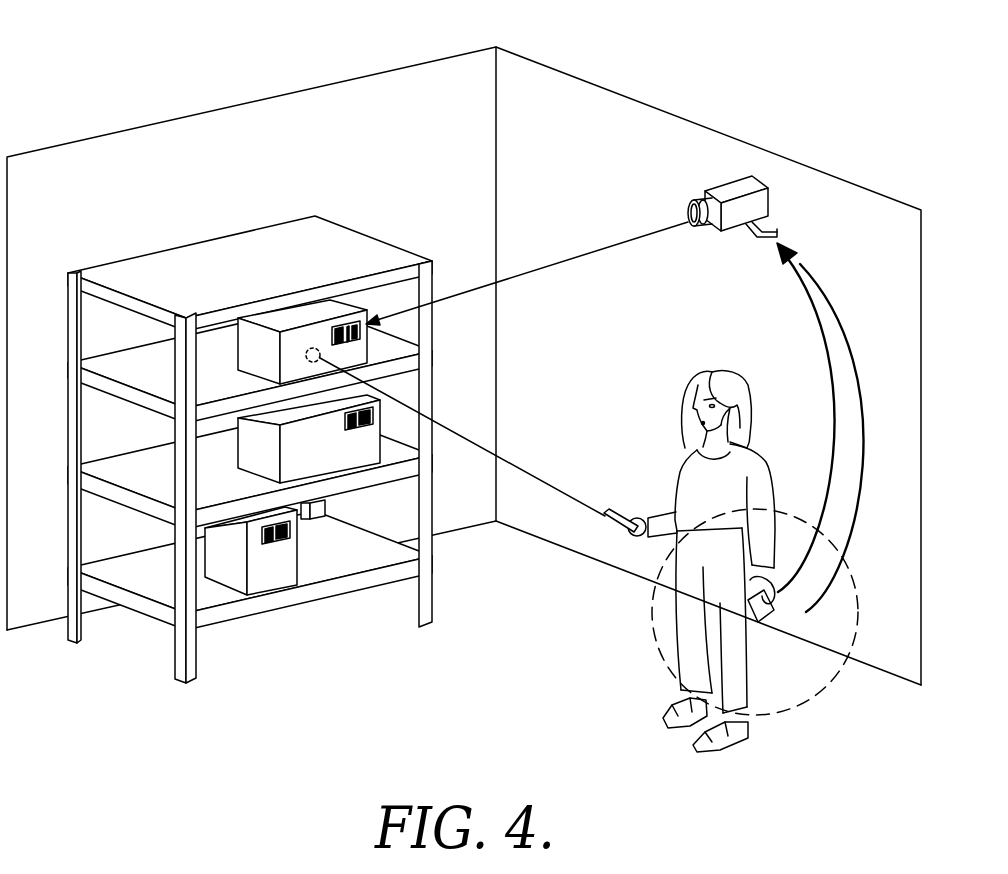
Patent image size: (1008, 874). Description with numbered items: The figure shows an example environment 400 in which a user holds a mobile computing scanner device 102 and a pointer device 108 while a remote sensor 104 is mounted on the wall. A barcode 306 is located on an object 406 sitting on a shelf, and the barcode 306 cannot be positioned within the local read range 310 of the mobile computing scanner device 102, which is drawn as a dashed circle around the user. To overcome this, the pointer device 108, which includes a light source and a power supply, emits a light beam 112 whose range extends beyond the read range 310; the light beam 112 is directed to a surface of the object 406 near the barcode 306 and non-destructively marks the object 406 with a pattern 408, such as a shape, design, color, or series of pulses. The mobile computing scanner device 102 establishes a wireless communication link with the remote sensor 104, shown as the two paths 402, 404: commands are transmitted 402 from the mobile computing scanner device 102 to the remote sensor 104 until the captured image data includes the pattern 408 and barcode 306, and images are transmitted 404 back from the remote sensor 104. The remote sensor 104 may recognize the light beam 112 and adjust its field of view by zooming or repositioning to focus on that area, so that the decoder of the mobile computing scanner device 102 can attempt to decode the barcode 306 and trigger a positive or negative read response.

The environment 400 is at (133, 67).
The pattern 408 is at (282, 355).
The object 406 is at (340, 296).
The barcode 306 is at (349, 310).
The remote sensor 104 is at (770, 199).
The transmitted images 404 is at (853, 320).
The transmitted commands 402 is at (838, 410).
The light beam 112 is at (535, 462).
The pointer device 108 is at (609, 540).
The mobile computing scanner device 102 is at (757, 640).
The local read range 310 is at (858, 607).